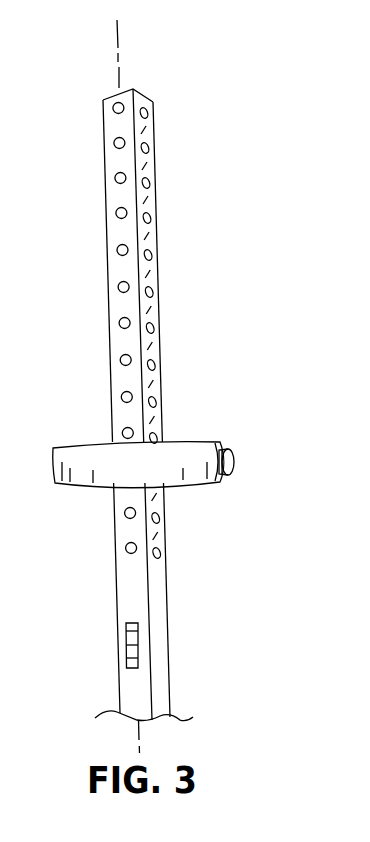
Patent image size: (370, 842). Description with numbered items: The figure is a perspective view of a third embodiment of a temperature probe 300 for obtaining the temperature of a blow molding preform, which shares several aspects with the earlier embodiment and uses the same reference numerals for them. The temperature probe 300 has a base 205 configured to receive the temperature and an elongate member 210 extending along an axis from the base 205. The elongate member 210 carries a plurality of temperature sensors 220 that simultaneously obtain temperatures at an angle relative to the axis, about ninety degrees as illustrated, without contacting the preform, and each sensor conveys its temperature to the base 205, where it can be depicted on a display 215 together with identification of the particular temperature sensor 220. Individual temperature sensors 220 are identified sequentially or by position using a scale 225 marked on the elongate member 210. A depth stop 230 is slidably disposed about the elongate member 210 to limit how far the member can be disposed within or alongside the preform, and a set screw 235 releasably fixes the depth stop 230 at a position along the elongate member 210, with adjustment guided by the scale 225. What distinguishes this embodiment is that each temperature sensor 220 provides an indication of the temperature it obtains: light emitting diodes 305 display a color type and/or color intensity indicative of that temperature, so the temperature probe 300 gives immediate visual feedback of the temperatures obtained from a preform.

The temperature probe 300 is at (163, 376).
The light emitting diodes 305 is at (147, 148).
The temperature sensors 220 is at (113, 144).
The elongate member 210 is at (105, 188).
The scale 225 is at (147, 200).
The depth stop 230 is at (192, 440).
The set screw 235 is at (232, 460).
The base 205 is at (167, 598).
The display 215 is at (130, 645).